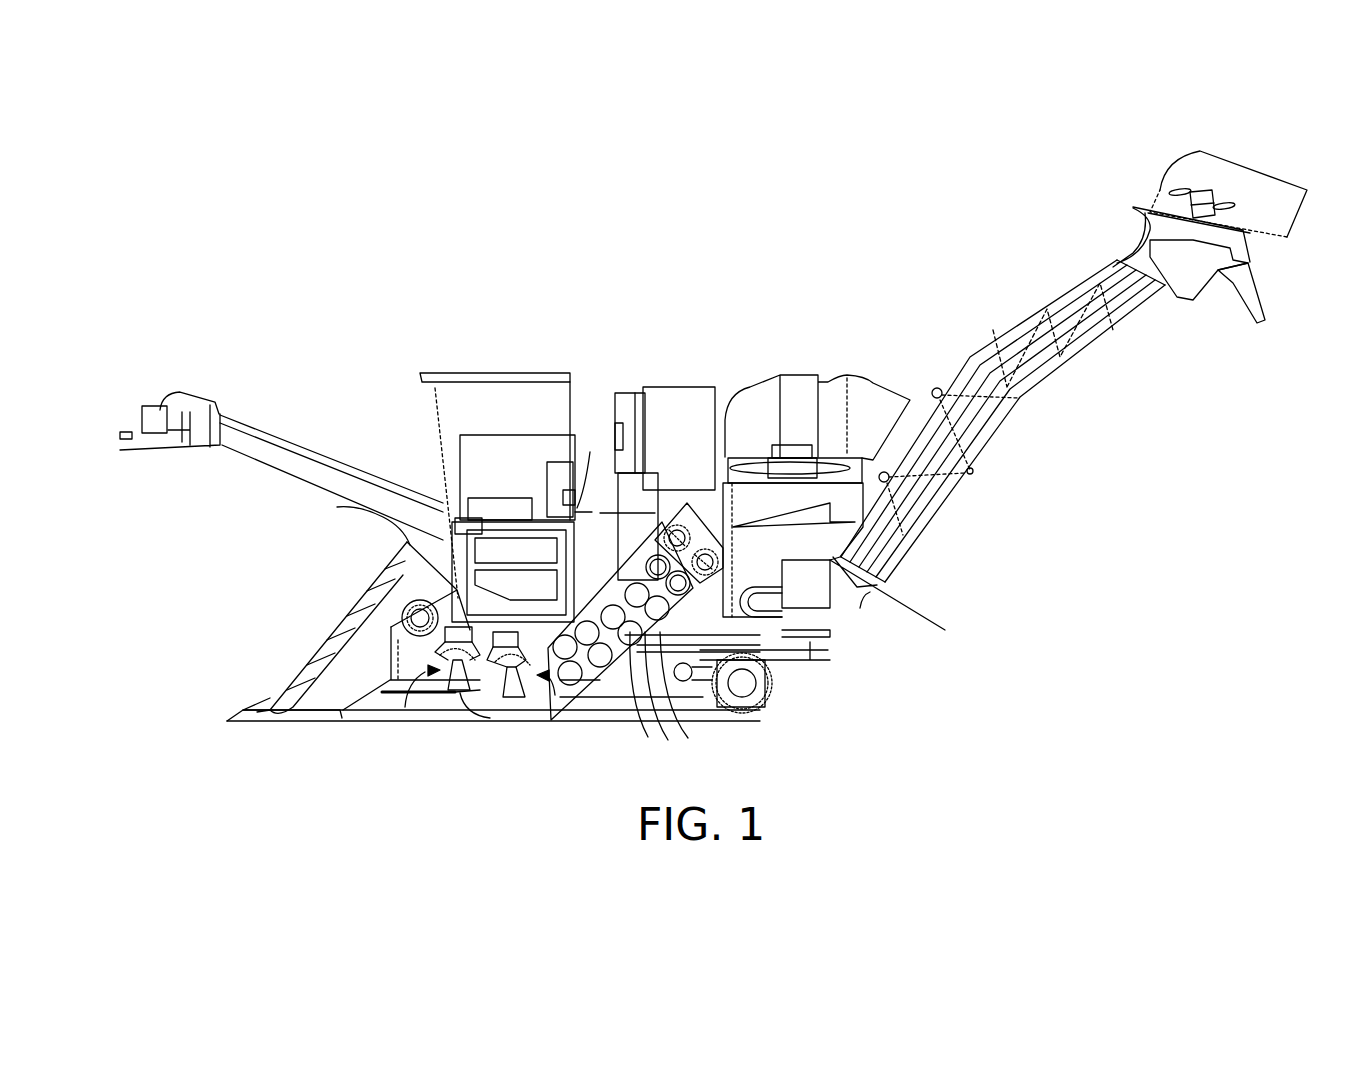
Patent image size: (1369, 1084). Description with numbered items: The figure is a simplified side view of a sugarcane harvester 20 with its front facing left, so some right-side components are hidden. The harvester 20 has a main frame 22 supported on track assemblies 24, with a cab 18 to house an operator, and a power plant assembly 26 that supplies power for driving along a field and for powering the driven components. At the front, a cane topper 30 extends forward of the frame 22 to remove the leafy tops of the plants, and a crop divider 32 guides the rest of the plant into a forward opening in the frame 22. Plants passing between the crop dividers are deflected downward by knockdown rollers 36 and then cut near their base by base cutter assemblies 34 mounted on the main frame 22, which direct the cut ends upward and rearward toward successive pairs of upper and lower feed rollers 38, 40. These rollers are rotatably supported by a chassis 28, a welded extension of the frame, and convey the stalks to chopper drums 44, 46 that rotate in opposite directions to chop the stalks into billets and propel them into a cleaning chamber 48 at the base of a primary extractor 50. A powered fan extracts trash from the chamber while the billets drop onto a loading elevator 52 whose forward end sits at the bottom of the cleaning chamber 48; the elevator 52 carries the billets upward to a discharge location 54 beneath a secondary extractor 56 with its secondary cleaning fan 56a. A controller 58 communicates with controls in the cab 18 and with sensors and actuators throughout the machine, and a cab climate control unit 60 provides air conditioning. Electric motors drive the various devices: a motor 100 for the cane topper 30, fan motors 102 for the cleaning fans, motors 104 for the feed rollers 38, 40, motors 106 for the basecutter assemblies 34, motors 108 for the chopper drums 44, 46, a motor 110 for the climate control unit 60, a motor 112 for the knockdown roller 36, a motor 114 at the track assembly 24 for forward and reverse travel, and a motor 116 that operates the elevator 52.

The cab 18 is at (515, 380).
The harvester 20 is at (379, 503).
The main frame 22 is at (378, 700).
The track assemblies 24 is at (590, 735).
The power plant assembly 26 is at (516, 585).
The chassis 28 is at (720, 655).
The cane topper 30 is at (187, 448).
The crop dividers 32 is at (305, 648).
The base cutter assemblies 34 is at (417, 683).
The knockdown rollers 36 is at (457, 630).
The upper feed rollers 38 is at (607, 606).
The lower feed rollers 40 is at (633, 639).
The chopper drum 44 is at (680, 495).
The chopper drum 46 is at (723, 556).
The cleaning chamber 48 is at (813, 517).
The primary extractor 50 is at (847, 400).
The loading elevator 52 is at (1003, 427).
The discharge location 54 is at (1213, 300).
The secondary extractor 56 is at (1162, 183).
The secondary cleaning fan 56a is at (1198, 190).
The controller 58 is at (477, 518).
The cab climate control unit 60 is at (558, 460).
The motor 100 is at (156, 400).
The fan motors 102 is at (790, 445).
The motors 104 is at (660, 520).
The motors 106 is at (457, 520).
The motors 108 is at (687, 527).
The motor 110 is at (588, 505).
The motor 112 is at (420, 605).
The motor 114 is at (690, 600).
The motor 116 is at (830, 590).